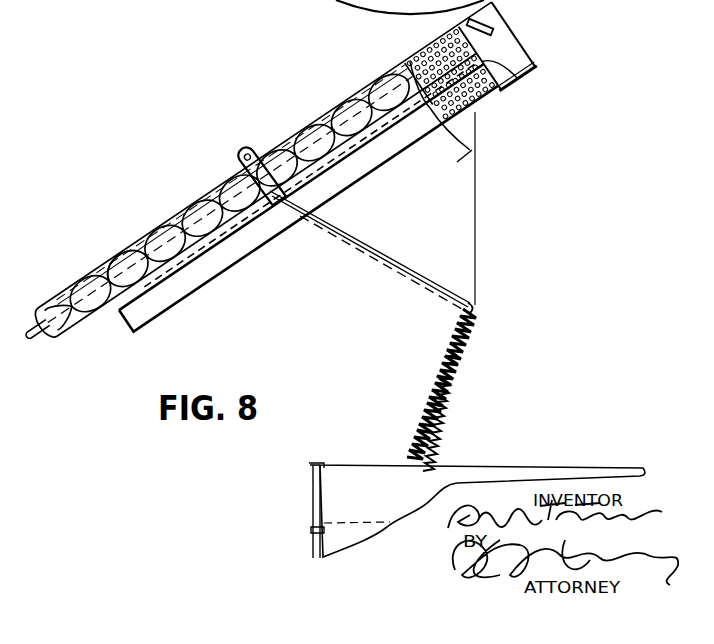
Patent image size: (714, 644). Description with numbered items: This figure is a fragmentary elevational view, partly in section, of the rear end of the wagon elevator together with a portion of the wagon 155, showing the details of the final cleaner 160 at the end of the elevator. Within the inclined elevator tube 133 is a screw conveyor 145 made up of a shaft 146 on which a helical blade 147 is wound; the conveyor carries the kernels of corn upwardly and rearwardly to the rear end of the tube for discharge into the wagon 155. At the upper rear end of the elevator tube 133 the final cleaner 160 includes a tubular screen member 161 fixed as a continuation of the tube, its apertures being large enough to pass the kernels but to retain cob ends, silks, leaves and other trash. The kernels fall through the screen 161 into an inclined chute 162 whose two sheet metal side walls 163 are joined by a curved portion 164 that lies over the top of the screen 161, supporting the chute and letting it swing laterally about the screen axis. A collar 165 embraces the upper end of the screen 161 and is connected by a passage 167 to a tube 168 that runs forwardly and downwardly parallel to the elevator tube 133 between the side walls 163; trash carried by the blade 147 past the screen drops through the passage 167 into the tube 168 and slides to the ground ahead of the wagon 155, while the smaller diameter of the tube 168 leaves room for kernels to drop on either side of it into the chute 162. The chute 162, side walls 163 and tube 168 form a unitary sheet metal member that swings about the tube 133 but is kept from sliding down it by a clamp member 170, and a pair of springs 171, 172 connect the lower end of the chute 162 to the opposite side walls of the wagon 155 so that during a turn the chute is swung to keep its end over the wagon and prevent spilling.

The elevator tube 133 is at (82, 280).
The screw conveyor 145 is at (108, 296).
The shaft 146 is at (147, 247).
The helical blade 147 is at (127, 258).
The wagon 155 is at (343, 472).
The final cleaner 160 is at (532, 99).
The tubular screen member 161 is at (430, 52).
The inclined chute 162 is at (373, 238).
The side walls 163 is at (458, 160).
The curved portion 164 is at (357, 93).
The collar 165 is at (520, 78).
The passage 167 is at (518, 61).
The tube 168 is at (227, 256).
The clamp member 170 is at (258, 169).
The spring 171 is at (446, 398).
The spring 172 is at (434, 401).